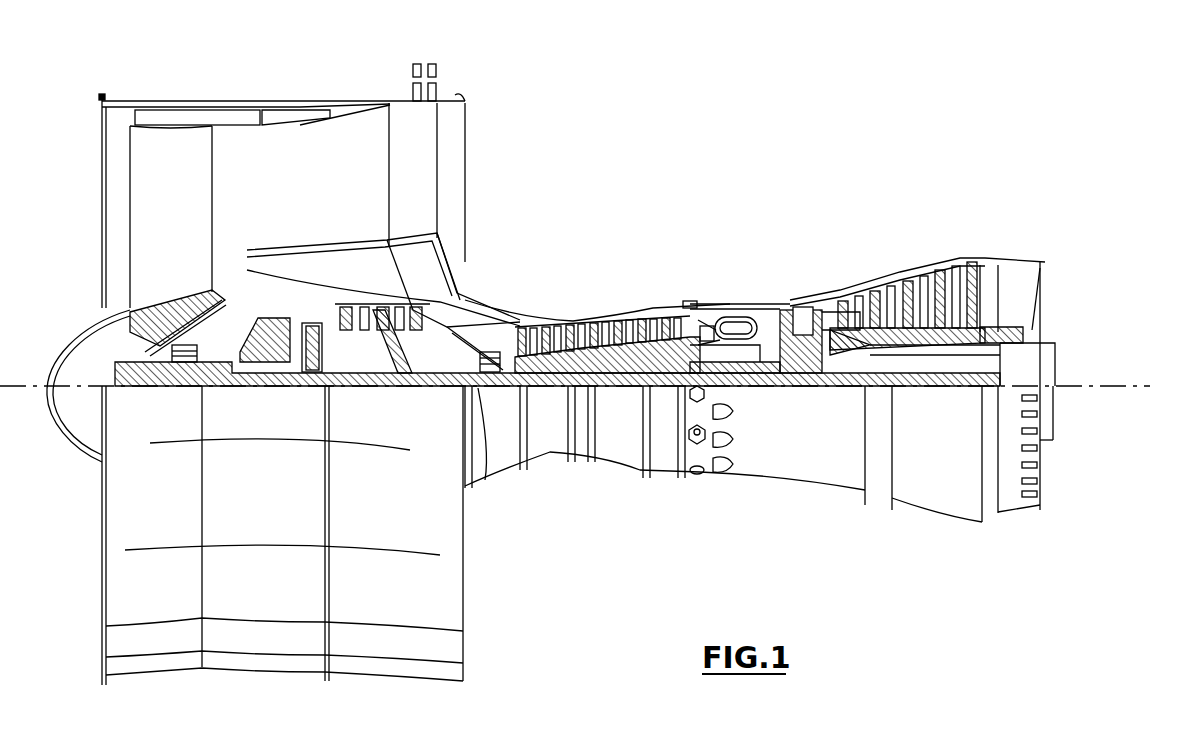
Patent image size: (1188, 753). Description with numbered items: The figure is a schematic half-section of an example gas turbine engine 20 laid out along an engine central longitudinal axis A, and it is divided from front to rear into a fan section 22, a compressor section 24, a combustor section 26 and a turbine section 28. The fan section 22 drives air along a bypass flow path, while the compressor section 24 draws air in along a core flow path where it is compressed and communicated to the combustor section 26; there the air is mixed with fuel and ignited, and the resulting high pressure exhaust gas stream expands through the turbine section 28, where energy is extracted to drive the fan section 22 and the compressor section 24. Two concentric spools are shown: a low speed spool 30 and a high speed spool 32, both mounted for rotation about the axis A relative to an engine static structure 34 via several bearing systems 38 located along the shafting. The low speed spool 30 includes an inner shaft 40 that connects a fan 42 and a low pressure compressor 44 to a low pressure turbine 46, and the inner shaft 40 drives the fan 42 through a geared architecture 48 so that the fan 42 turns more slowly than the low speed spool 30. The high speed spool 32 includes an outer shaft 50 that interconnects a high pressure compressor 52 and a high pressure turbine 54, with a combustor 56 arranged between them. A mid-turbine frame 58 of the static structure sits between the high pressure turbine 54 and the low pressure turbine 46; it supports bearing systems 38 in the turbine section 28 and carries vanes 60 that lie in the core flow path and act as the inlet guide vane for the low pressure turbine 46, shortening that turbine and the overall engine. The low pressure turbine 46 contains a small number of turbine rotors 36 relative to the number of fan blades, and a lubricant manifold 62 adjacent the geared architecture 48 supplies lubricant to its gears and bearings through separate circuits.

The gas turbine engine 20 is at (742, 155).
The fan section 22 is at (310, 76).
The compressor section 24 is at (725, 218).
The combustor section 26 is at (826, 218).
The turbine section 28 is at (1000, 218).
The low speed spool 30 is at (621, 394).
The high speed spool 32 is at (660, 352).
The turbine rotors 34 is at (938, 346).
The engine static structure 36 is at (660, 480).
The bearing systems 38 is at (176, 388).
The inner shaft 40 is at (484, 470).
The fan 42 is at (184, 228).
The low pressure compressor section 44 is at (440, 250).
The low pressure turbine section 46 is at (928, 282).
The geared architecture 48 is at (288, 388).
The outer shaft 50 is at (747, 374).
The high pressure compressor section 52 is at (598, 366).
The high pressure turbine section 54 is at (802, 306).
The combustor 56 is at (738, 328).
The mid-turbine frame 58 is at (848, 296).
The vanes 60 is at (862, 360).
The lubricant manifold 62 is at (308, 324).
The engine central longitudinal axis A is at (1133, 386).